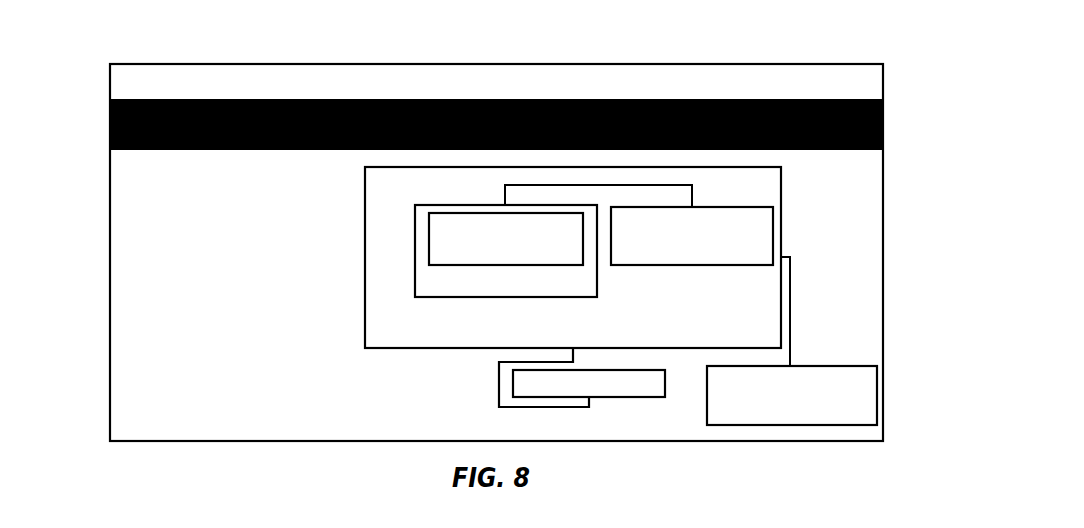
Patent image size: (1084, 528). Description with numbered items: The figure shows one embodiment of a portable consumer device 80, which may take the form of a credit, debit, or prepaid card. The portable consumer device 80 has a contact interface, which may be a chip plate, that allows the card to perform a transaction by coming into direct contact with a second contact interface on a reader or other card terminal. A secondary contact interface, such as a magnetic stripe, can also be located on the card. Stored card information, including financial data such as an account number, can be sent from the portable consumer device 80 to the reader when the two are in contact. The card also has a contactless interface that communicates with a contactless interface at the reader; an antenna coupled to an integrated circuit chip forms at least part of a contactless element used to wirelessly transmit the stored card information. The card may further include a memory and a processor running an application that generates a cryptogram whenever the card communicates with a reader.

The portable consumer device 80 is at (122, 43).